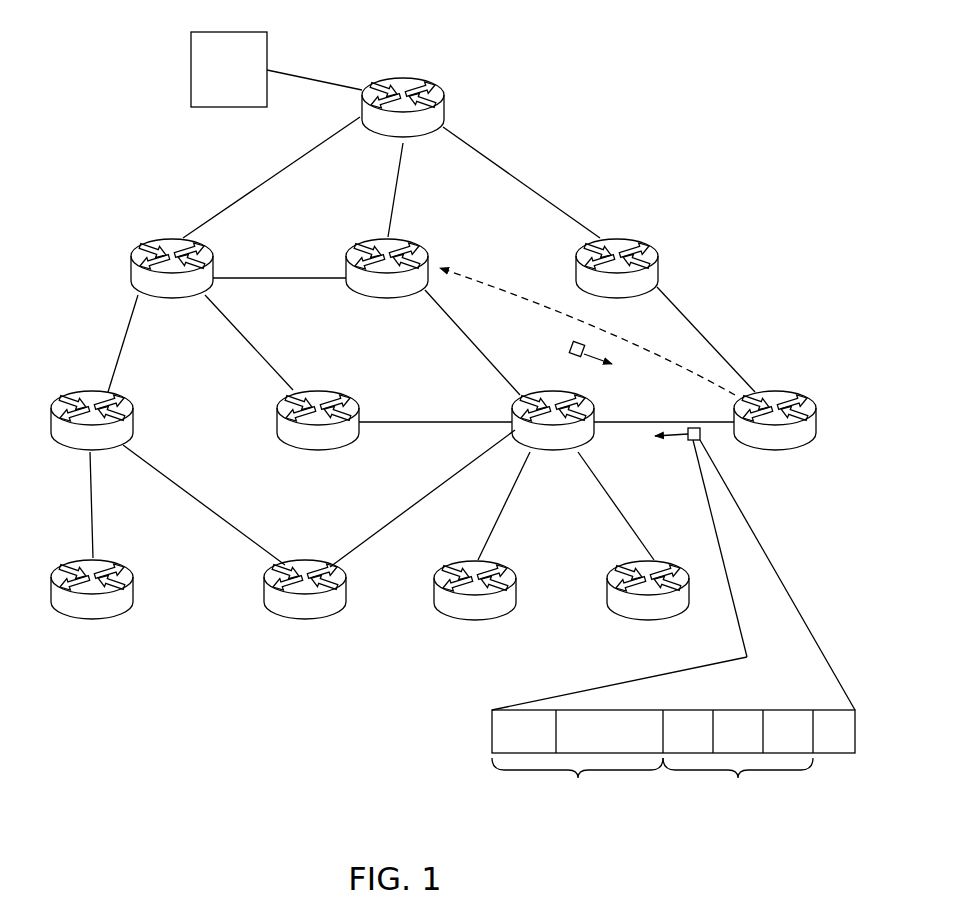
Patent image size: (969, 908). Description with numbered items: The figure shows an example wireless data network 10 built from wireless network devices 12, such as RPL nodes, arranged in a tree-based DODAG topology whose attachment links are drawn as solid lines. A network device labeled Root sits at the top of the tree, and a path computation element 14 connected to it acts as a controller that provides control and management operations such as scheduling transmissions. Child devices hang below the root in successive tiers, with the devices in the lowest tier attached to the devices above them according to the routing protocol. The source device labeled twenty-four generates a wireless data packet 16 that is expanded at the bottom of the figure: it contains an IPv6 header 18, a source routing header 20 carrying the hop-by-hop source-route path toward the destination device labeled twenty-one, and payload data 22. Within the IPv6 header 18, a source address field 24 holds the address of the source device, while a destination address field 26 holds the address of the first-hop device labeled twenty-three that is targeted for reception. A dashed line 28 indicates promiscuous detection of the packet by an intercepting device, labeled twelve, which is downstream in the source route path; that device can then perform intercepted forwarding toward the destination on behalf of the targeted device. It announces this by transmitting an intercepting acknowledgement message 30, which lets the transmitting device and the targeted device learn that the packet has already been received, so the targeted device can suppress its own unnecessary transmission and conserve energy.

The wireless data network 10 is at (130, 135).
The wireless network device 12 is at (410, 78).
The path computation element (PCE) 14 is at (268, 50).
The wireless data packet 16 is at (686, 441).
The IPv6 header 18 is at (577, 784).
The source routing header 20 is at (738, 784).
The payload data 22 is at (835, 750).
The source address field 24 is at (500, 720).
The destination address field 26 is at (613, 722).
The promiscuous detection 28 is at (493, 280).
The intercepting acknowledgement message 30 is at (571, 343).